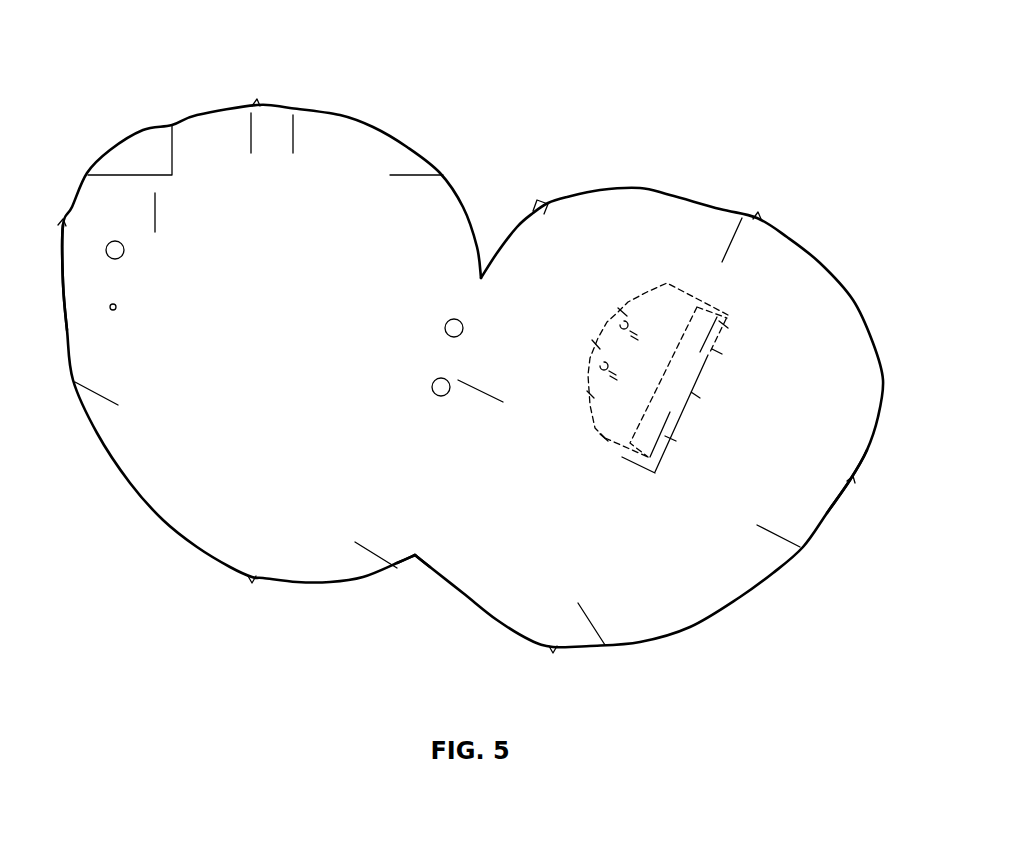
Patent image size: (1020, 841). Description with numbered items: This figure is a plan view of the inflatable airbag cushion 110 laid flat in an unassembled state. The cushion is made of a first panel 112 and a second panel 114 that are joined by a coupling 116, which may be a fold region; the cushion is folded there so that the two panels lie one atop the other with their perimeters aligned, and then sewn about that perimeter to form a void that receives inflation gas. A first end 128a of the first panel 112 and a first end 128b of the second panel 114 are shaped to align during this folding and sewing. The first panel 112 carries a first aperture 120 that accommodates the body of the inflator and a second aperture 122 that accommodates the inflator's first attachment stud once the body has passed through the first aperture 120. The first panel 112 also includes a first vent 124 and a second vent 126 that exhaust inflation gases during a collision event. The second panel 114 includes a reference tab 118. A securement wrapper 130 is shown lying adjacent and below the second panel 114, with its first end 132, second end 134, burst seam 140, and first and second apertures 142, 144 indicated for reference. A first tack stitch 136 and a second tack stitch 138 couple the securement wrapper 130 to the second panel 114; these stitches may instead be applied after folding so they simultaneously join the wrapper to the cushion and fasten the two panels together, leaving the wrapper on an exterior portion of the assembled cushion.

The inflatable airbag cushion 110 is at (133, 76).
The first panel 112 is at (268, 493).
The second panel 114 is at (546, 545).
The coupling 116 is at (404, 592).
The reference tab 118 is at (538, 202).
The first aperture 120 is at (122, 258).
The second aperture 122 is at (116, 311).
The first vent 124 is at (447, 320).
The second vent 126 is at (433, 380).
The first end of the first panel 128a is at (63, 283).
The first end of the second panel 128b is at (830, 513).
The securement wrapper 130 is at (605, 440).
The first end 132 is at (695, 395).
The second end 134 is at (597, 345).
The first tack stitch 136 is at (717, 352).
The second tack stitch 138 is at (670, 438).
The burst seam 140 is at (723, 325).
The first aperture of the securement wrapper 142 is at (622, 312).
The second aperture of the securement wrapper 144 is at (590, 395).